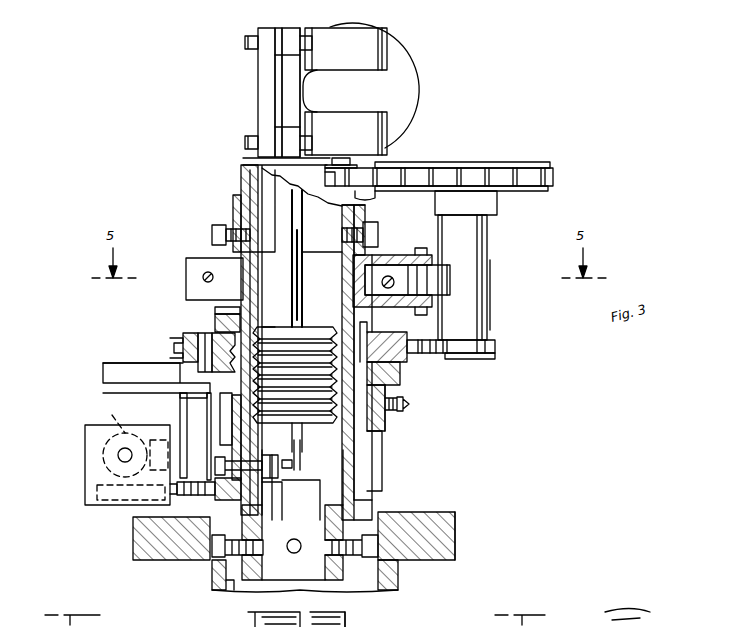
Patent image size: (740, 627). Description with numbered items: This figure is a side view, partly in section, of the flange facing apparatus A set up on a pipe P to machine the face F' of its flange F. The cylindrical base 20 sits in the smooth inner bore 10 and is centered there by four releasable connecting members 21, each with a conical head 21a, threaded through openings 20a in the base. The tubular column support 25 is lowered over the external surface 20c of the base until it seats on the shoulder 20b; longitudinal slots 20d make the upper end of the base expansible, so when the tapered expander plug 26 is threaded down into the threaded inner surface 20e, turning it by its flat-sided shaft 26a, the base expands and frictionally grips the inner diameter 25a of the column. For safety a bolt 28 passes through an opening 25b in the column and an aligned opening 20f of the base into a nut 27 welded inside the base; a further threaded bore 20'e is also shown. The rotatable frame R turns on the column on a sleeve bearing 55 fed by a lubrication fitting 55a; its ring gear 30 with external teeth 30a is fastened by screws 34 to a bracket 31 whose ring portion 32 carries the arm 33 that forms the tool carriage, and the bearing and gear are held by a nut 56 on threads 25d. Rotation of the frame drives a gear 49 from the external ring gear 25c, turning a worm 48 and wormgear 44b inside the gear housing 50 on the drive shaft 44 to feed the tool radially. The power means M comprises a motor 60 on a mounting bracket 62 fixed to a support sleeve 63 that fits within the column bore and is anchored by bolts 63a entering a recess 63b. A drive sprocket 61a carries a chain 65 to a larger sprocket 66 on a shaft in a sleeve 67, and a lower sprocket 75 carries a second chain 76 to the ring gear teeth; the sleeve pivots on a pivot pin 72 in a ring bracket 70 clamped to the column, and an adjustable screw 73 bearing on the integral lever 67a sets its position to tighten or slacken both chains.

The motor 60 is at (396, 48).
The power means M is at (415, 77).
The mounting bracket 62 is at (258, 90).
The apparatus A is at (486, 134).
The chain 65 is at (385, 175).
The larger sprocket 66 is at (540, 162).
The drive sprocket 61a is at (366, 194).
The support sleeve 63 is at (250, 185).
The bolts 63a is at (215, 236).
The recess 63b is at (245, 228).
The sleeve 67 is at (487, 230).
The lever 67a is at (490, 292).
The ring bracket 70 is at (385, 254).
The pivot pin 72 is at (420, 248).
The adjustable screw 73 is at (398, 281).
The sprocket 75 is at (490, 357).
The chain 76 is at (432, 338).
The tubular column support 25 is at (244, 292).
The inner diameter 25a is at (205, 262).
The opening 25b is at (220, 448).
The external ring gear 25c is at (385, 472).
The threads 25d is at (215, 320).
The expander plug 26 is at (312, 330).
The shaft 26a is at (304, 260).
The nut 27 is at (284, 466).
The bolt 28 is at (215, 464).
The base 20 is at (334, 339).
The threaded openings 20a is at (330, 518).
The shoulder 20b is at (222, 496).
The external surface 20c is at (398, 386).
The longitudinal slots 20d is at (378, 336).
The inner surface threads 20e is at (268, 340).
The opening 20f is at (268, 488).
The housing bore 20'e is at (371, 619).
The releasable connecting members 21 is at (288, 546).
The head 21a is at (215, 558).
The nut 56 is at (215, 308).
The screws 34 is at (215, 330).
The ring gear 30 is at (185, 340).
The gear teeth 30a is at (172, 350).
The rotatable frame R is at (105, 364).
The bracket 31 is at (102, 375).
The ring portion 32 is at (182, 388).
The arm 33 is at (180, 408).
The worm 48 is at (186, 425).
The drive shaft 44 is at (85, 452).
The wormgear 44b is at (112, 415).
The gear housing 50 is at (85, 432).
The gear 49 is at (97, 490).
The sleeve bearing 55 is at (400, 372).
The lubrication fitting 55a is at (408, 404).
The flange F is at (310, 536).
The face F' is at (469, 520).
The pipe P is at (405, 578).
The inner bore 10 is at (220, 596).